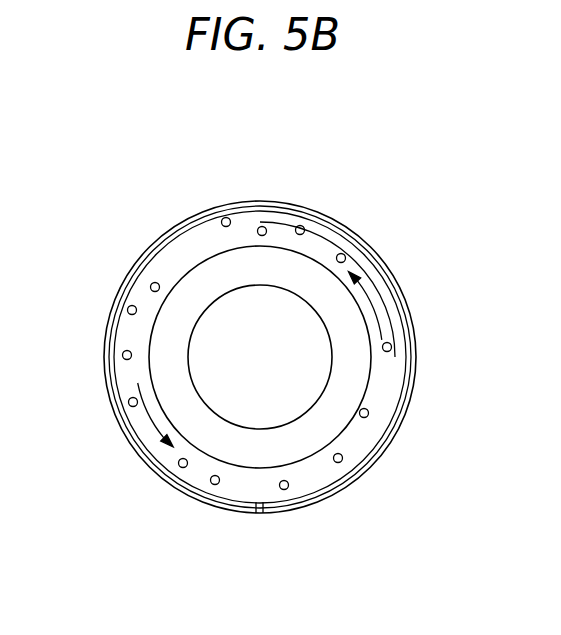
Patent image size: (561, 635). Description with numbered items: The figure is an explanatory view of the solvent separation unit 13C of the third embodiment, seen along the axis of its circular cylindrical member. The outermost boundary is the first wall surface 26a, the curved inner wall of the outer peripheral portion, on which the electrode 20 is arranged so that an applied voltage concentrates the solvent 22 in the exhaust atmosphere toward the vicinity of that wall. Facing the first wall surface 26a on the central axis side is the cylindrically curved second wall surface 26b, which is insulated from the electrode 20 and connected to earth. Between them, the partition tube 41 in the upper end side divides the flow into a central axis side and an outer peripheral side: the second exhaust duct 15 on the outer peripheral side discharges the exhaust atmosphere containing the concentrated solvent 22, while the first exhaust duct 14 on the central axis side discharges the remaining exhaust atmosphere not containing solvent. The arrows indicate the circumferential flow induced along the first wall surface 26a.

The solvent separation unit 13C is at (224, 179).
The electrode 20 is at (361, 237).
The first wall surface 26a is at (137, 258).
The second exhaust duct 15 is at (362, 442).
The first exhaust duct 14 is at (358, 375).
The partition tube 41 is at (310, 250).
The second wall surface 26b is at (327, 345).
The solvent 22 is at (150, 289).